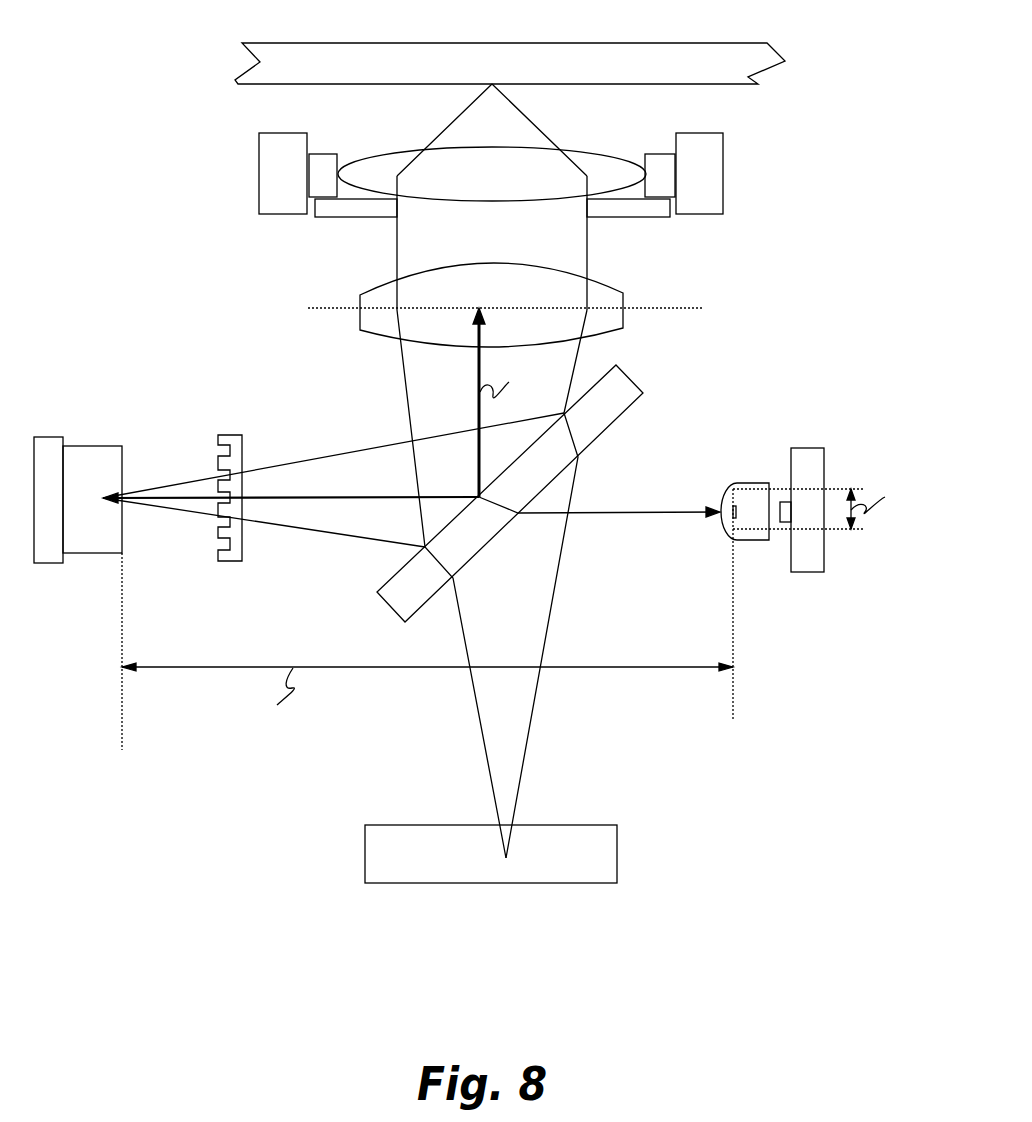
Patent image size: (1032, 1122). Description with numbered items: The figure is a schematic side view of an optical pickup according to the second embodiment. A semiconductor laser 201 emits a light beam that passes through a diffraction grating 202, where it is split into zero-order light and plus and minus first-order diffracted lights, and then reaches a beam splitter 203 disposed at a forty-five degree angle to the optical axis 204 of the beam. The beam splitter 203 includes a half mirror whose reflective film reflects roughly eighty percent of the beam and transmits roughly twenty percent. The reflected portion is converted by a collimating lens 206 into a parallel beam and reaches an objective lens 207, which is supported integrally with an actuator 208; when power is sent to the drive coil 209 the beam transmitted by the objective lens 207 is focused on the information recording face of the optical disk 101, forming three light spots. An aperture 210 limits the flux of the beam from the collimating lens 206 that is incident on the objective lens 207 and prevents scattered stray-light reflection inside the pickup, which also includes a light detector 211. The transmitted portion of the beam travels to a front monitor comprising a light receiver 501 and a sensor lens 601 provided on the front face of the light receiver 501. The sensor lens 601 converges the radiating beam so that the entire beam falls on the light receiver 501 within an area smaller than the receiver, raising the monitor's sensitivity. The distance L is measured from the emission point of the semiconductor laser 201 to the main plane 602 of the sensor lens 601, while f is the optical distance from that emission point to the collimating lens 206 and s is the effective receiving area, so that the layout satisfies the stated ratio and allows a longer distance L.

The optical disk 101 is at (635, 43).
The semiconductor laser 201 is at (47, 435).
The diffraction grating 202 is at (243, 435).
The beam splitter 203 is at (637, 382).
The optical axis 204 is at (343, 500).
The collimating lens 206 is at (623, 297).
The objective lens 207 is at (375, 155).
The actuator 208 is at (322, 148).
The drive coil 209 is at (258, 188).
The aperture 210 is at (337, 217).
The light detector 211 is at (583, 825).
The light receiver 501 is at (792, 508).
The sensor lens 601 is at (757, 483).
The main plane 602 is at (730, 513).